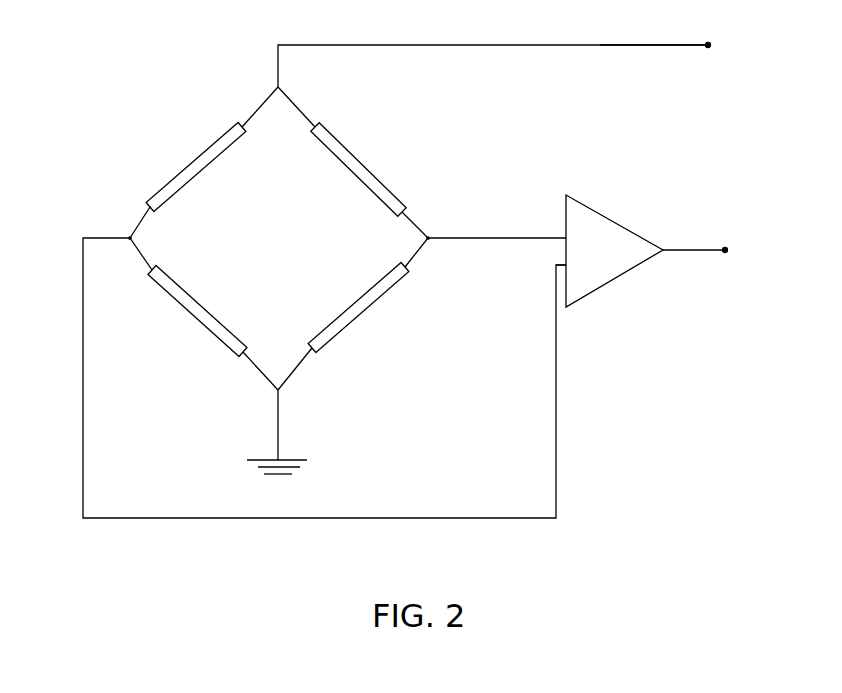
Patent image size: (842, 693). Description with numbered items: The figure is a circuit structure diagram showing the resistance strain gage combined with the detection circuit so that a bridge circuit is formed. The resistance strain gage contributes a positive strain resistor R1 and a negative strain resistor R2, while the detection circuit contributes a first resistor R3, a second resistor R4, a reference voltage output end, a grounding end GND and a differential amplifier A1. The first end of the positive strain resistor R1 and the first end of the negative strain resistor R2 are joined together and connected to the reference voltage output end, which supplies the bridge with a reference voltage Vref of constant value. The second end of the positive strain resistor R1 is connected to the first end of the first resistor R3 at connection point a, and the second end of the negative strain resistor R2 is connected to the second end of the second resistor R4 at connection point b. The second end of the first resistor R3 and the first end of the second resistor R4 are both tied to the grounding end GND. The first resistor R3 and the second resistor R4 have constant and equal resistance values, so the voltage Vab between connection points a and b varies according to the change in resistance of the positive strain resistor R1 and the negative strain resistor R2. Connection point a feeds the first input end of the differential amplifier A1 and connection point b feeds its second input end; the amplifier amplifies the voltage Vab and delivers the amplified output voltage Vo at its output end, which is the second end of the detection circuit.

The positive strain resistor R1 is at (204, 162).
The negative strain resistor R2 is at (353, 162).
The first resistor R3 is at (204, 314).
The second resistor R4 is at (353, 314).
The differential amplifier A1 is at (614, 251).
The connection point a is at (117, 222).
The connection point b is at (435, 222).
The voltage between connection points a and b Vab is at (531, 263).
The output voltage Vo is at (697, 234).
The reference voltage Vref is at (655, 31).
The grounding end GND is at (277, 486).